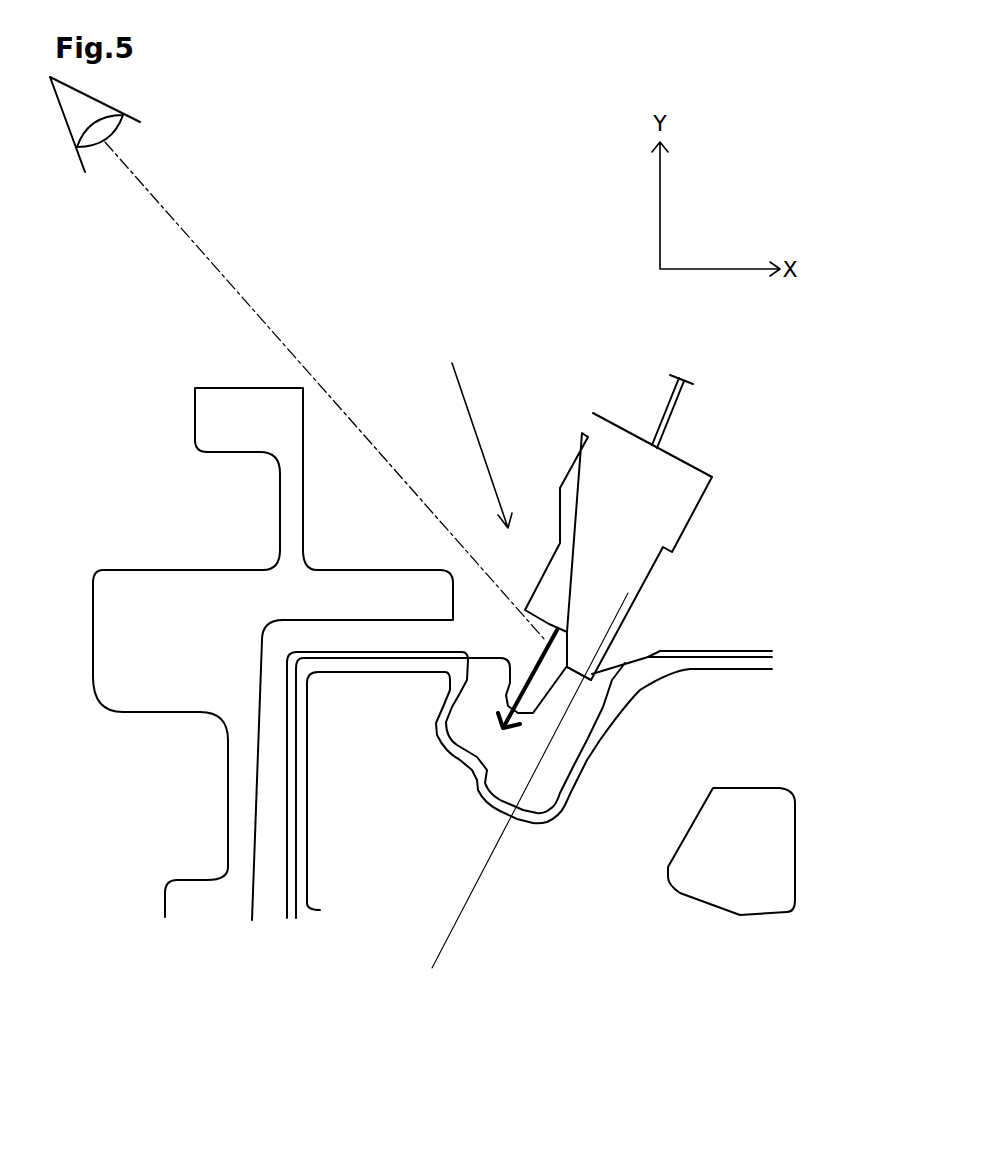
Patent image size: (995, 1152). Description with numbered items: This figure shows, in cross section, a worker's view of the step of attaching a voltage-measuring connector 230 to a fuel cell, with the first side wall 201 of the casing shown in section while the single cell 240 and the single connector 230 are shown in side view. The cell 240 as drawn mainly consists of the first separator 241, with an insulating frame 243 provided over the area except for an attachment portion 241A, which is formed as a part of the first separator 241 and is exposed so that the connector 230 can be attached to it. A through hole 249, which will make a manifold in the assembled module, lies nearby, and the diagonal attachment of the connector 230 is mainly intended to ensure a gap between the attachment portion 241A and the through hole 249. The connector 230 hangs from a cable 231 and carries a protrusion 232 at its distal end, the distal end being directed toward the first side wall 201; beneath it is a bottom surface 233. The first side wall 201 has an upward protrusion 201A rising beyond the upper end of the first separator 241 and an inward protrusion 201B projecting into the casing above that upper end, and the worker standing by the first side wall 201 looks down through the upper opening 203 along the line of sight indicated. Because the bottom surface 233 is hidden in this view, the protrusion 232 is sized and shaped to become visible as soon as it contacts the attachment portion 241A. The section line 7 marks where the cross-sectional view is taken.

The section line 7- 7 is at (613, 596).
The first side wall 201 is at (247, 843).
The upward protrusion 201A is at (235, 413).
The inward protrusion 201B is at (351, 580).
The upper opening 203 is at (472, 430).
The connector 230 is at (673, 505).
The cable 231 is at (687, 400).
The protrusion 232 is at (597, 667).
The bottom surface 233 is at (533, 628).
The cell 240 is at (479, 767).
The first separator 241 is at (635, 863).
The attachment portion 241A is at (490, 705).
The insulating frame 243 is at (740, 655).
The through hole 249 is at (760, 866).